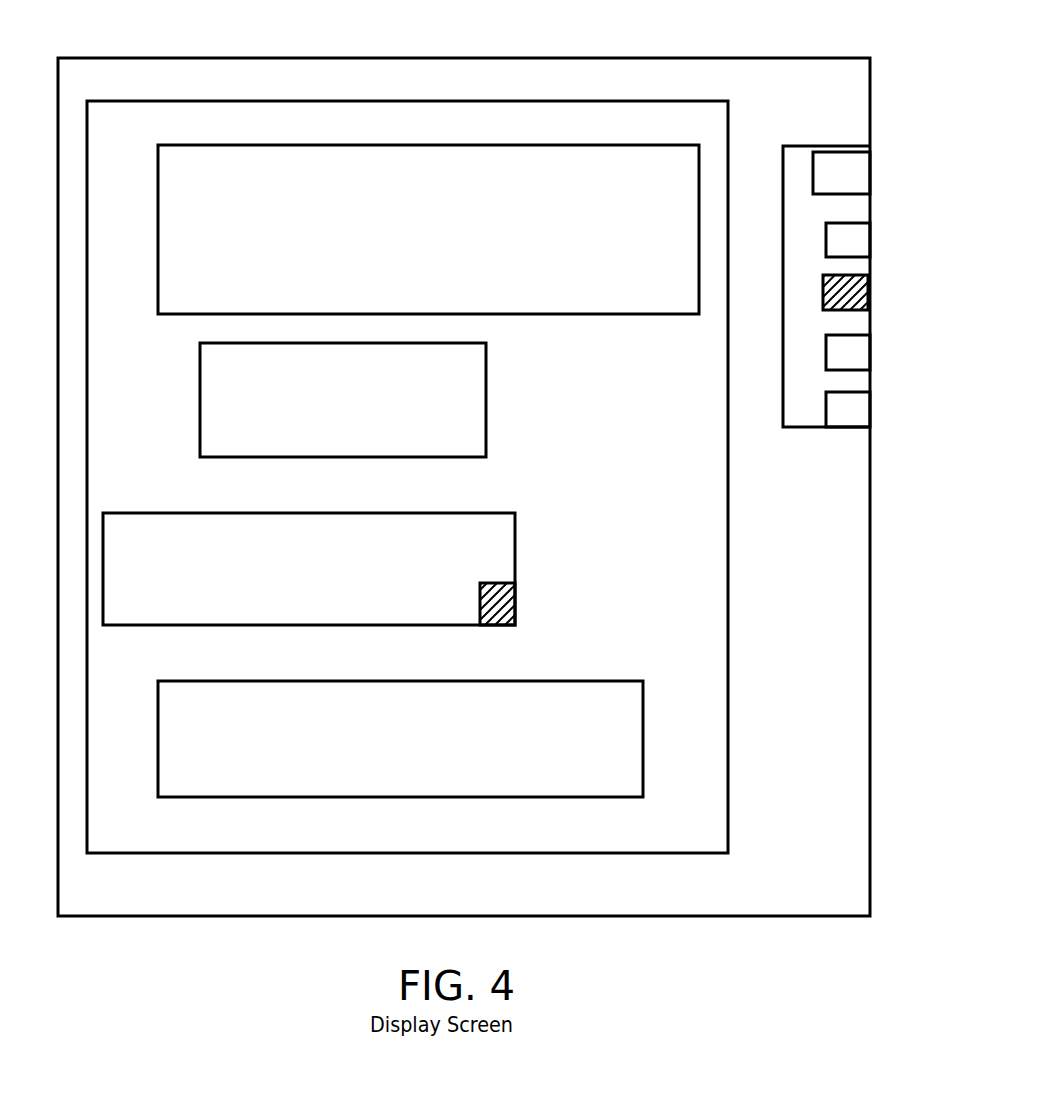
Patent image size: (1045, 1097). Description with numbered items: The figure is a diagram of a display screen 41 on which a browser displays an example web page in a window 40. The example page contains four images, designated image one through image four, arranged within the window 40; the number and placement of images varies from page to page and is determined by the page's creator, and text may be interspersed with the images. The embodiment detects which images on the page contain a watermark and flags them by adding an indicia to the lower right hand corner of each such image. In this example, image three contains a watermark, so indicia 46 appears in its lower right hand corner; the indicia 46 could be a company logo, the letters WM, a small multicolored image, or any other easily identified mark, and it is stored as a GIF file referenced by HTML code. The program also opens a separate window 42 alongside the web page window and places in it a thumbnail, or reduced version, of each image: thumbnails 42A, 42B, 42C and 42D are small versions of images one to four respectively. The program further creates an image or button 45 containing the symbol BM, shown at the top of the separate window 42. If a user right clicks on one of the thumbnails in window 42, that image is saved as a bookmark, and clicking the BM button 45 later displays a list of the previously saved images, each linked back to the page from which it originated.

The window 40 is at (252, 101).
The display screen 41 is at (728, 57).
The separate window 42 is at (783, 286).
The thumbnail 42A is at (870, 238).
The thumbnail 42B is at (870, 295).
The thumbnail 42C is at (870, 350).
The thumbnail 42D is at (870, 410).
The BM button 45 is at (870, 173).
The indicia 46 is at (515, 605).